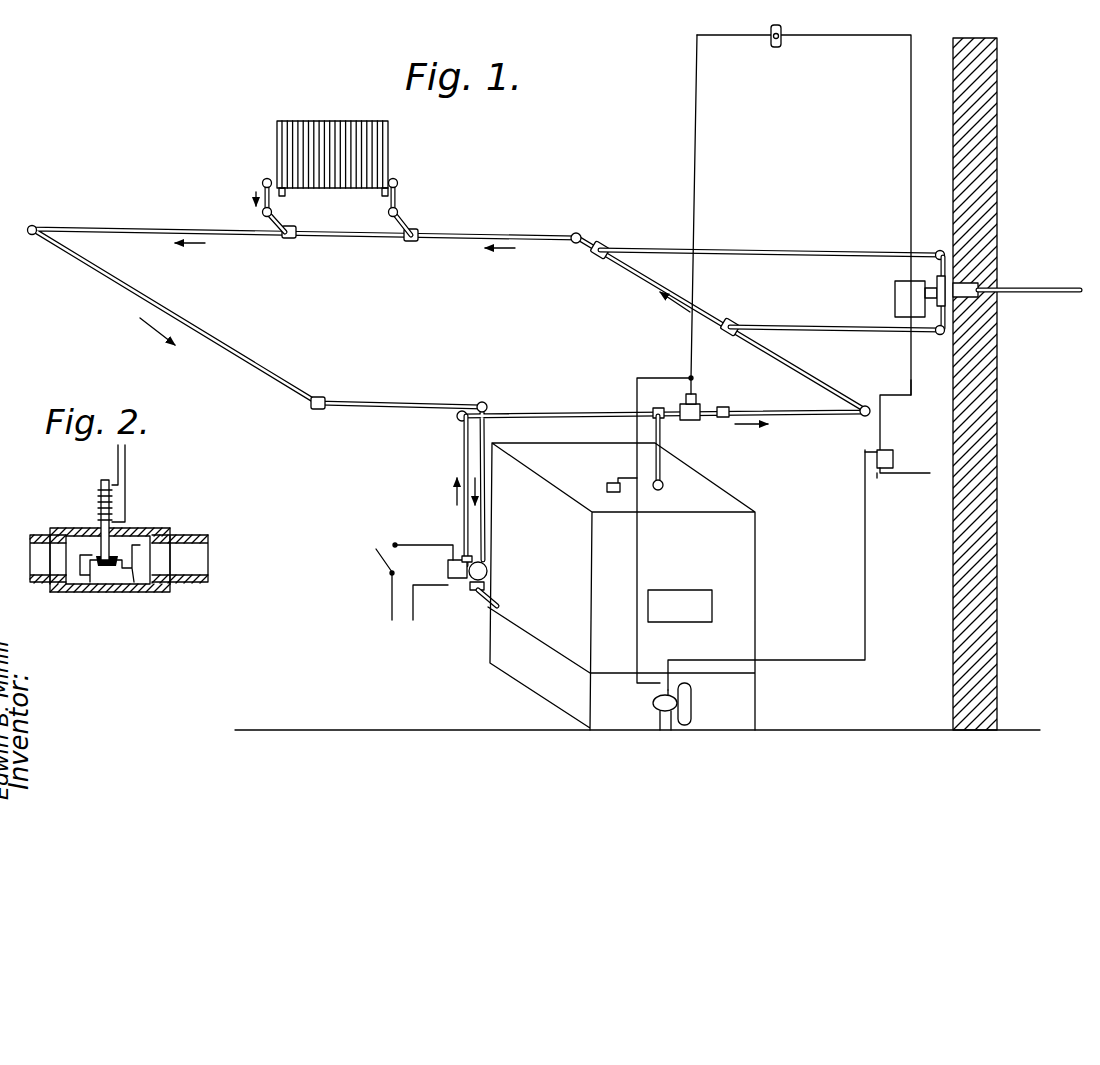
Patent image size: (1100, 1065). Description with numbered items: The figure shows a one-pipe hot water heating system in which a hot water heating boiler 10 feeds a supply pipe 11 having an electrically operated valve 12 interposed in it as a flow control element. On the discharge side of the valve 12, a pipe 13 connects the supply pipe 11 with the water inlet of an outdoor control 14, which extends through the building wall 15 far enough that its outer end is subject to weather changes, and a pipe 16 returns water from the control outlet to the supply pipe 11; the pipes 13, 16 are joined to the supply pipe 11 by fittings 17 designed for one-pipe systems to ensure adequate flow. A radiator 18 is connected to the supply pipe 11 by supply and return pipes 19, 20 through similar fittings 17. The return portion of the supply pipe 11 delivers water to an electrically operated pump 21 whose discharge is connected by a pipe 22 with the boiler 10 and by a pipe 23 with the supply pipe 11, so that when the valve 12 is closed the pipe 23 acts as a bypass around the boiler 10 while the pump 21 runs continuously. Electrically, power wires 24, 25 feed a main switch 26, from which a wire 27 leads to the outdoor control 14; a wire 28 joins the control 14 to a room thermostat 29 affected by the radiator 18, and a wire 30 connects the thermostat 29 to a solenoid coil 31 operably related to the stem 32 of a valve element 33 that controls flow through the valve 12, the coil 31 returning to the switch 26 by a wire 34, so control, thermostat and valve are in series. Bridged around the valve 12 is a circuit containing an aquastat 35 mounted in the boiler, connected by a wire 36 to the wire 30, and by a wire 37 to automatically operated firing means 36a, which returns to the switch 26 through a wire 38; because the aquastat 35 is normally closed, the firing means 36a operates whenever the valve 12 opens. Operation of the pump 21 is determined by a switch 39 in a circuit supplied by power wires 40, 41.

In FIG. 1, the hot water heating boiler 10 is at (740, 552).
In FIG. 1, the supply pipe 11 is at (662, 468).
In FIG. 2, the supply pipe 11 is at (205, 535).
In FIG. 1, the electrically operated valve 12 is at (700, 410).
In FIG. 2, the electrically operated valve 12 is at (172, 520).
In FIG. 1, the pipe 13 is at (855, 333).
In FIG. 1, the outdoor control 14 is at (1030, 278).
In FIG. 1, the building wall 15 is at (998, 160).
In FIG. 1, the pipe 16 is at (812, 240).
In FIG. 1, the fittings 17 is at (289, 240).
In FIG. 1, the radiator 18 is at (392, 140).
In FIG. 1, the supply pipe 19 is at (398, 197).
In FIG. 1, the return pipe 20 is at (272, 205).
In FIG. 1, the electrically operated pump 21 is at (488, 570).
In FIG. 1, the pipe 22 is at (497, 602).
In FIG. 1, the pipe 23 is at (462, 445).
In FIG. 1, the power wire 24 is at (905, 465).
In FIG. 1, the power wire 25 is at (905, 482).
In FIG. 1, the main switch 26 is at (893, 458).
In FIG. 1, the wire 27 is at (911, 378).
In FIG. 1, the wire 28 is at (909, 147).
In FIG. 1, the room thermostat 29 is at (776, 48).
In FIG. 1, the wire 30 is at (697, 140).
In FIG. 2, the wire 30 is at (115, 455).
In FIG. 2, the solenoid coil 31 is at (98, 495).
In FIG. 2, the stem 32 is at (98, 520).
In FIG. 2, the valve element 33 is at (112, 555).
In FIG. 1, the wire 34 is at (716, 395).
In FIG. 2, the wire 34 is at (125, 460).
In FIG. 1, the aquastat 35 is at (608, 483).
In FIG. 1, the wire 36 is at (636, 440).
In FIG. 1, the firing means 36a is at (691, 703).
In FIG. 1, the wire 37 is at (633, 548).
In FIG. 1, the wire 38 is at (797, 658).
In FIG. 1, the switch 39 is at (375, 560).
In FIG. 1, the power wire 40 is at (388, 600).
In FIG. 1, the power wire 41 is at (418, 600).